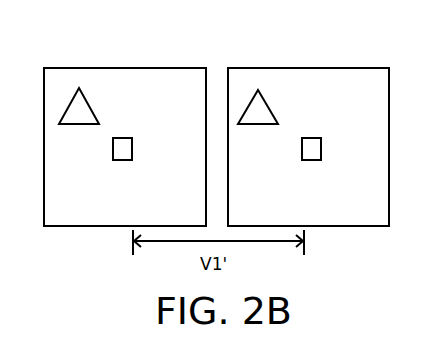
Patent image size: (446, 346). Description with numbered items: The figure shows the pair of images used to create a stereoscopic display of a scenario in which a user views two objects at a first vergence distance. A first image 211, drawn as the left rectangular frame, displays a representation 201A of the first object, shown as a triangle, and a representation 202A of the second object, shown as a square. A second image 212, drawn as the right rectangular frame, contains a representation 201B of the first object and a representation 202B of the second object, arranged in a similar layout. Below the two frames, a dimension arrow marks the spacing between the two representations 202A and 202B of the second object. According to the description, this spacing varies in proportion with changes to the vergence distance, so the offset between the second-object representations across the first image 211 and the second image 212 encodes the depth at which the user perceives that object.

The representation of the first object 201A is at (77, 98).
The representation of the second object 202A is at (125, 137).
The representation of the first object 201B is at (250, 99).
The representation of the second object 202B is at (310, 137).
The first image 211 is at (63, 227).
The second image 212 is at (371, 227).